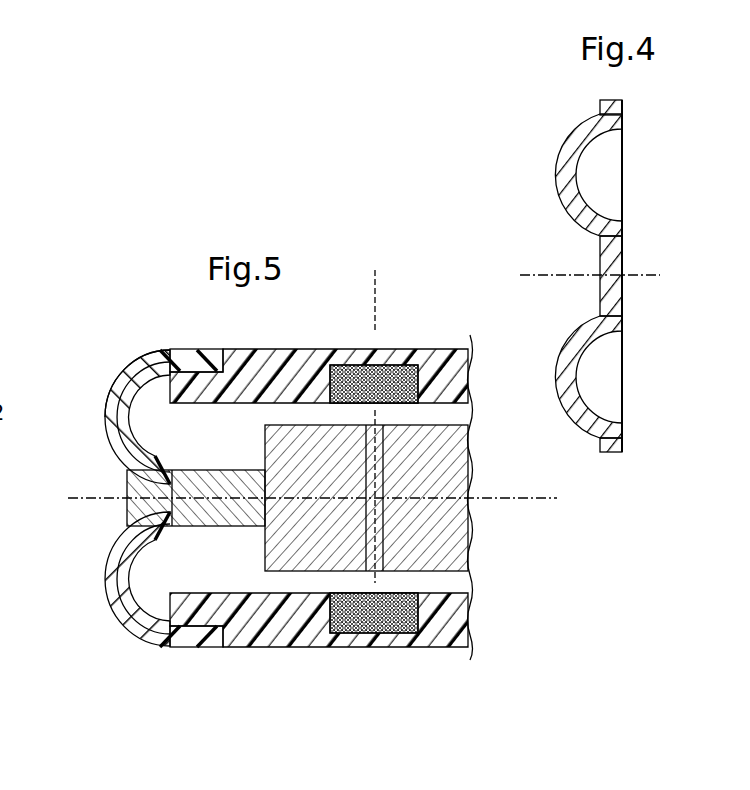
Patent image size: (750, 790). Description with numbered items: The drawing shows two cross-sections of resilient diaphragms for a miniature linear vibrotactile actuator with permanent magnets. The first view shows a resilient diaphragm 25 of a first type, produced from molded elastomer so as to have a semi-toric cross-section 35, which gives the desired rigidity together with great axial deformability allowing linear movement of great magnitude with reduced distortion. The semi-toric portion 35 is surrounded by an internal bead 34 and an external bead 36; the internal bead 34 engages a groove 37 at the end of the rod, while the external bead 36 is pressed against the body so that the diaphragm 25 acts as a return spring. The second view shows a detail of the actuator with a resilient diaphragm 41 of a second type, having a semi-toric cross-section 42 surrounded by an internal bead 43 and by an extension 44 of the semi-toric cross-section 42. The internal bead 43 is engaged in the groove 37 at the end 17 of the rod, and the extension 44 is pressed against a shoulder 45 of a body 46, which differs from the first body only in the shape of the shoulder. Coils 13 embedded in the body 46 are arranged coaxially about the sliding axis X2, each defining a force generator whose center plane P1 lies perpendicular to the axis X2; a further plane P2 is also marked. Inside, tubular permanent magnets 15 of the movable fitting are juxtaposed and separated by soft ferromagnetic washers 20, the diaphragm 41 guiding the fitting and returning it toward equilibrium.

In FIG. 4, the resilient diaphragm 25 is at (606, 265).
In FIG. 4, the internal bead 34 is at (623, 230).
In FIG. 4, the semi-toric cross-section 35 is at (560, 150).
In FIG. 4, the external bead 36 is at (623, 113).
In FIG. 5, the conductive wire coil 13 is at (390, 365).
In FIG. 5, the tubular permanent magnet 15 is at (265, 447).
In FIG. 5, the end of the rod 17 is at (127, 488).
In FIG. 5, the washer 20 is at (380, 572).
In FIG. 5, the groove 37 is at (125, 520).
In FIG. 5, the resilient diaphragm 41 is at (117, 357).
In FIG. 5, the semi-toric cross-section 42 is at (112, 382).
In FIG. 5, the internal bead 43 is at (140, 462).
In FIG. 5, the extension 44 is at (193, 645).
In FIG. 5, the shoulder 45 is at (208, 350).
In FIG. 5, the body 46 is at (360, 665).
In FIG. 5, the center plane P1 is at (375, 297).
In FIG. 5, the plane P2 is at (380, 417).
In FIG. 5, the axis X2 is at (312, 486).